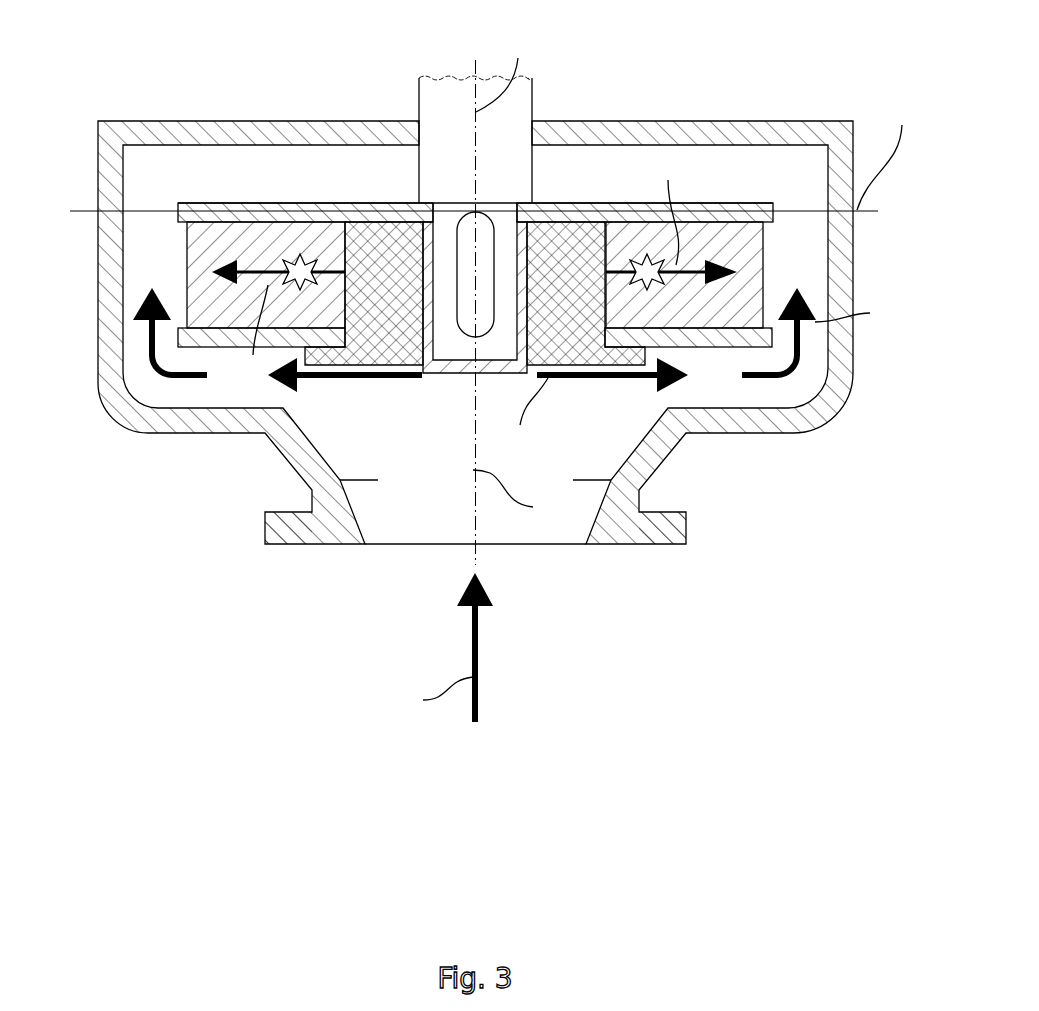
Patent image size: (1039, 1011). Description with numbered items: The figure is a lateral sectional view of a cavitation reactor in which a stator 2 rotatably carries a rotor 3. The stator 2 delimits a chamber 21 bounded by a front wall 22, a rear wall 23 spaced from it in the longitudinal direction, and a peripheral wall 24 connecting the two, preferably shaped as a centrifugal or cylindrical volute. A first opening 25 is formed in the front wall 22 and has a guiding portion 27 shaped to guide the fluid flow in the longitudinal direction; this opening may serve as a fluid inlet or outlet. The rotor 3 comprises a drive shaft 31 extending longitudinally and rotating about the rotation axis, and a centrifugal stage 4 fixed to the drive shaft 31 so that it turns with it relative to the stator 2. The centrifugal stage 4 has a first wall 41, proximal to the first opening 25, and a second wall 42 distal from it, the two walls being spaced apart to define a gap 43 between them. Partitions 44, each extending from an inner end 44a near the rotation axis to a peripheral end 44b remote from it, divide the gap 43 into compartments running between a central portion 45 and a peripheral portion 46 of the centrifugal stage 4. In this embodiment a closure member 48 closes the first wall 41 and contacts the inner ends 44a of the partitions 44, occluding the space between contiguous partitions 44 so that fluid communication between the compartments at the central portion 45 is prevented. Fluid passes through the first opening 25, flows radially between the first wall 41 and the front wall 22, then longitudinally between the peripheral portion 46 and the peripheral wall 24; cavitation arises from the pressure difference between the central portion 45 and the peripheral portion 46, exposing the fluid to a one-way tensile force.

The stator 2 is at (480, 362).
The rotor 3 is at (404, 199).
The centrifugal stage 4 is at (466, 281).
The chamber 21 is at (518, 335).
The front wall 22 is at (728, 433).
The rear wall 23 is at (619, 121).
The peripheral wall 24 is at (858, 350).
The first opening 25 is at (415, 545).
The guiding portion 27 is at (578, 540).
The drive shaft 31 is at (419, 90).
The first wall 41 is at (707, 347).
The second wall 42 is at (603, 198).
The gap 43 is at (754, 257).
The partition 44 is at (466, 283).
The inner end 44a is at (347, 303).
The peripheral end 44b is at (185, 257).
The central portion 45 is at (440, 398).
The peripheral portion 46 is at (219, 355).
The closure member 48 is at (618, 298).